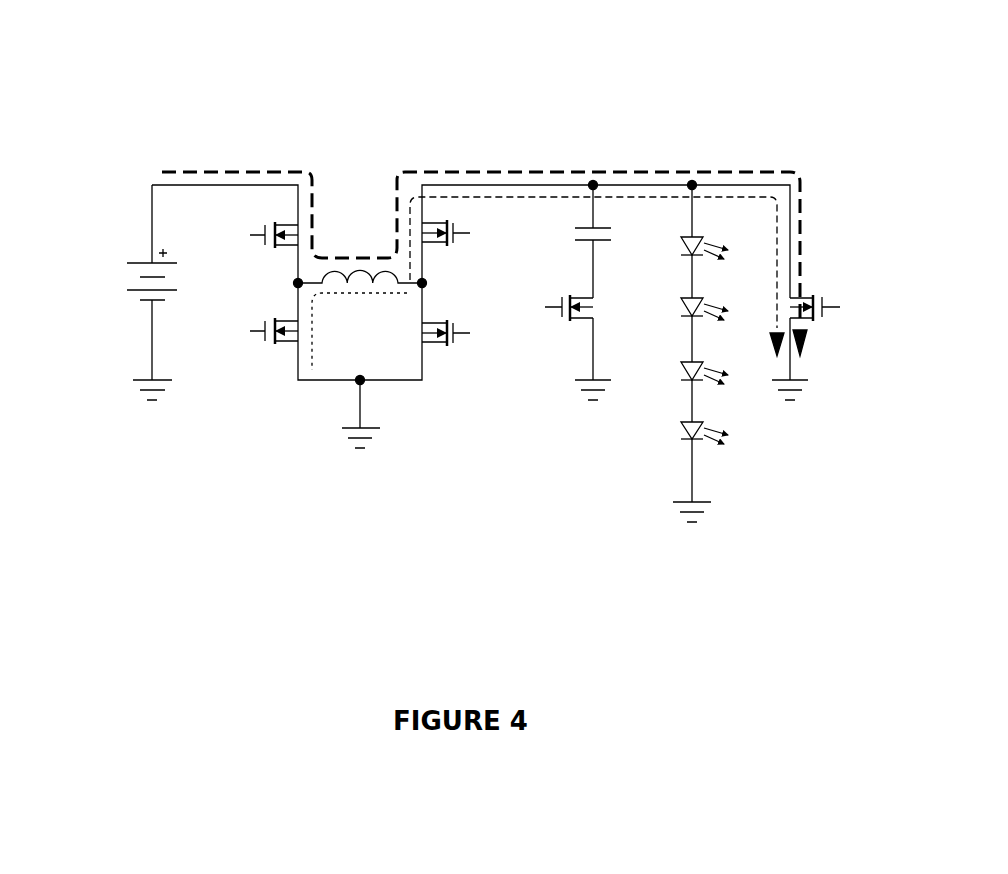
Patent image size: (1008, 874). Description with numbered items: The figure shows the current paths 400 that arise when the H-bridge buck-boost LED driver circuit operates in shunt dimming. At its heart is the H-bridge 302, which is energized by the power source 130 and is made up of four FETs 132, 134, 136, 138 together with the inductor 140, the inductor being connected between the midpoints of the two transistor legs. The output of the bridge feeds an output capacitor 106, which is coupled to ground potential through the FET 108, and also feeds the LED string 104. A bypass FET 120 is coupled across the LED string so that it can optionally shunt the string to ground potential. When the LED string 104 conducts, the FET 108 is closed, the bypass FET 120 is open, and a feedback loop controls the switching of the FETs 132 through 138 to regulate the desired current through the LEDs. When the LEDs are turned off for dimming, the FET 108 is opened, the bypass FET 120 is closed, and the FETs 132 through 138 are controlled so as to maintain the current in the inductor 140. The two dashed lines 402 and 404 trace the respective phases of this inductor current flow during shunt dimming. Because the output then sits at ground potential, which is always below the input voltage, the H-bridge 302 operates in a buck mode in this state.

The current paths during shunt dimming 400 is at (471, 28).
The dashed line 402 is at (280, 168).
The inductor 140 is at (345, 262).
The dashed line 404 is at (362, 295).
The power source 130 is at (128, 283).
The FET 132 is at (258, 242).
The FET 134 is at (258, 340).
The FET 136 is at (460, 242).
The FET 138 is at (460, 340).
The H-bridge 302 is at (284, 426).
The output capacitor 106 is at (600, 242).
The FET 108 is at (548, 318).
The bypass FET 120 is at (820, 332).
The LED string 104 is at (742, 425).